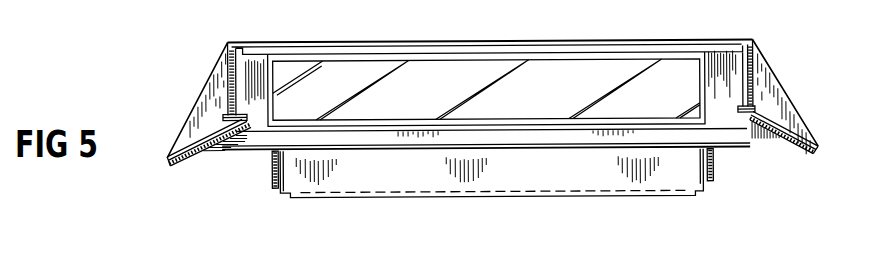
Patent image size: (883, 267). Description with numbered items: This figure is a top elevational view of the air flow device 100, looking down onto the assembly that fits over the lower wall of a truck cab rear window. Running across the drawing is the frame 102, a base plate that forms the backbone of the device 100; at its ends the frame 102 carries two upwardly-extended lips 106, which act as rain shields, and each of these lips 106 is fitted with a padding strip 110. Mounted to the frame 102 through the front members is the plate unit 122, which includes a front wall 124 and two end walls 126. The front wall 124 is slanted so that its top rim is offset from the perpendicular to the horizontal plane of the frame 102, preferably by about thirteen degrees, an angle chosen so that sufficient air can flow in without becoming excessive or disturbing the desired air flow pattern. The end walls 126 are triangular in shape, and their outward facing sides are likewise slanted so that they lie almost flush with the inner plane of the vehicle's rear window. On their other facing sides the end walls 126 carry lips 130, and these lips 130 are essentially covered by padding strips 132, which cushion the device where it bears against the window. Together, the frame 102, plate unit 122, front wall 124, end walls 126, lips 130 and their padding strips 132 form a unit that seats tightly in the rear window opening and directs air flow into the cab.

The air flow device 100 is at (183, 91).
The frame 102 is at (400, 185).
The upwardly-extended lips 106 is at (283, 176).
The padding strip 110 is at (271, 170).
The plate unit 122 is at (755, 41).
The front wall 124 is at (762, 138).
The end walls 126 is at (190, 122).
The lips 130 is at (252, 121).
The padding strips 132 is at (168, 162).